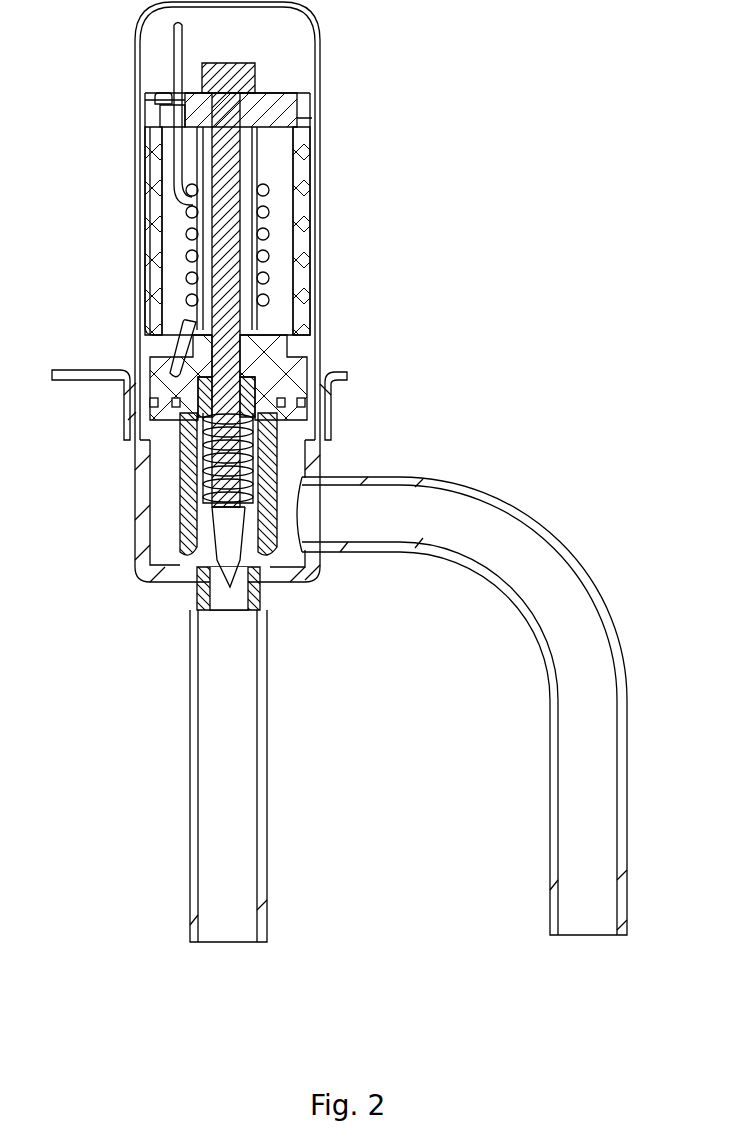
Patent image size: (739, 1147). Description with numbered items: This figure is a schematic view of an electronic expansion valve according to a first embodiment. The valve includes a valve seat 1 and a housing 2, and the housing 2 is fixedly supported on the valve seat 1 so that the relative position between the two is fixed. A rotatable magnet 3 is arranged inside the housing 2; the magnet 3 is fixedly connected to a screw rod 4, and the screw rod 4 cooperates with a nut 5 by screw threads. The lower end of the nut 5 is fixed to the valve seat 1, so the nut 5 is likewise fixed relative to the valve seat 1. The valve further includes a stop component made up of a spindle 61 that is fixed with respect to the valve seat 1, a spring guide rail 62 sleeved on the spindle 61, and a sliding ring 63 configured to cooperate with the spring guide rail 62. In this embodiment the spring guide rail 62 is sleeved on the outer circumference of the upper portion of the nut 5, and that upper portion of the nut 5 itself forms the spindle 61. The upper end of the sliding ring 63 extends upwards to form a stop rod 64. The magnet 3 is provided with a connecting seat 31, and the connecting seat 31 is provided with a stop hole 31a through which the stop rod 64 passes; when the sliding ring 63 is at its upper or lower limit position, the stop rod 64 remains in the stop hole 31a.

The valve seat 1 is at (150, 520).
The housing 2 is at (316, 70).
The magnet 3 is at (300, 127).
The screw rod 4 is at (190, 316).
The nut 5 is at (282, 437).
The connecting seat 31 is at (163, 112).
The stop hole 31a is at (163, 95).
The spindle 61 is at (292, 180).
The spring guide rail 62 is at (190, 245).
The sliding ring 63 is at (266, 215).
The stop rod 64 is at (185, 152).